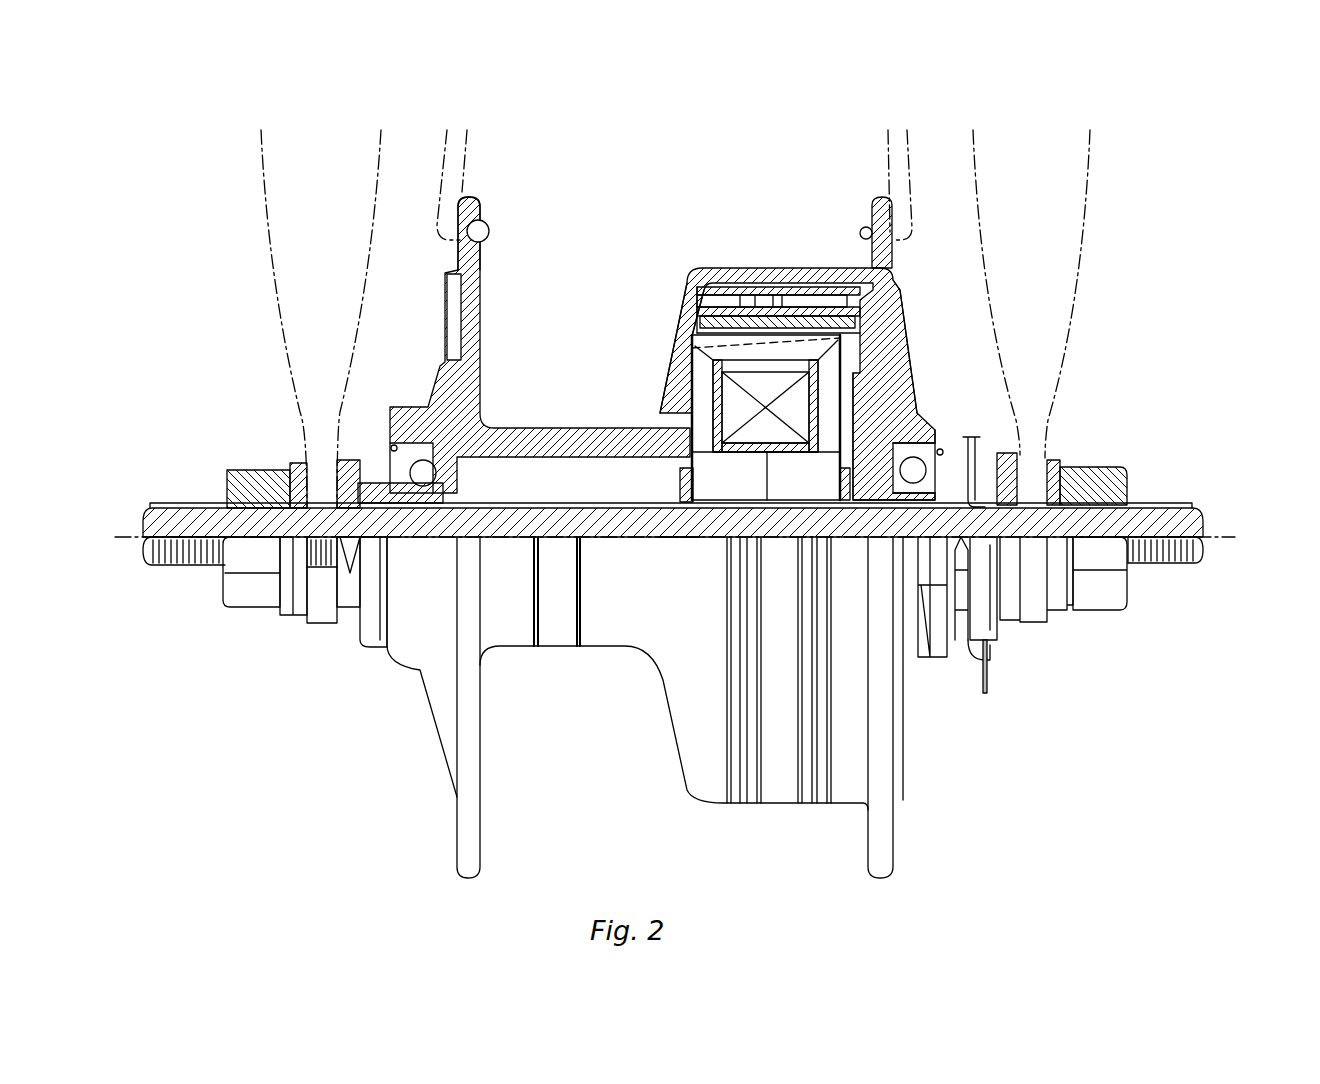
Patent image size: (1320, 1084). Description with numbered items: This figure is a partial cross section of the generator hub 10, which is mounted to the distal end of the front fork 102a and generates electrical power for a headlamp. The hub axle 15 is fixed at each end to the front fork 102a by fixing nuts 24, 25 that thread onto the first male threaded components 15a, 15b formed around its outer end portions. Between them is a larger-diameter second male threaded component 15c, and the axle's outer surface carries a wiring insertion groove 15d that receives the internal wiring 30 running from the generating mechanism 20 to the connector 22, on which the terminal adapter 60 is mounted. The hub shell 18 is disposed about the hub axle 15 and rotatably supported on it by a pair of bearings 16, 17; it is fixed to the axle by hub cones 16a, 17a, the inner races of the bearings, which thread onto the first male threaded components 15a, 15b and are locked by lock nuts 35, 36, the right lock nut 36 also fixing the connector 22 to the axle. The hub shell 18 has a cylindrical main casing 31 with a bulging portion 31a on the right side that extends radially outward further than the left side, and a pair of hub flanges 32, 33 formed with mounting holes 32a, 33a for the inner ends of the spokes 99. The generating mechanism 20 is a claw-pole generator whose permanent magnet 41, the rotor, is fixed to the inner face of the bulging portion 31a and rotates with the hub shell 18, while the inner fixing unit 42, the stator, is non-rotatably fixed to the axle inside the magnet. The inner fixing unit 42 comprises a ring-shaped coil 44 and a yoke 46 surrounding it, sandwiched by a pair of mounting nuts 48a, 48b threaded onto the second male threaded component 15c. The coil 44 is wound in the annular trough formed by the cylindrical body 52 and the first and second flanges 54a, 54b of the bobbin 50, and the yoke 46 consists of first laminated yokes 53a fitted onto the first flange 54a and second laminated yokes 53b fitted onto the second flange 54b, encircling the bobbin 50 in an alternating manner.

The generator hub 10 is at (617, 162).
The hub axle 15 is at (1216, 504).
The first male threaded component 15a is at (172, 507).
The first male threaded component 15b is at (1170, 505).
The second male threaded component 15c is at (553, 504).
The wiring insertion groove 15d is at (688, 537).
The bearing 16 is at (433, 403).
The hub cone 16a is at (377, 460).
The bearing 17 is at (945, 430).
The hub cone 17a is at (1010, 455).
The hub shell 18 is at (572, 406).
The generating mechanism 20 is at (767, 268).
The connector 22 is at (973, 620).
The fixing nut 24 is at (265, 597).
The fixing nut 25 is at (1093, 590).
The internal wiring 30 is at (945, 663).
The main casing 31 is at (530, 425).
The bulging portion 31a is at (722, 268).
The hub flange 32 is at (481, 202).
The mounting holes 32a is at (489, 227).
The hub flange 33 is at (880, 197).
The mounting holes 33a is at (868, 224).
The lock nut 35 is at (348, 597).
The lock nut 36 is at (1048, 460).
The permanent magnet 41 is at (700, 278).
The inner fixing unit 42 is at (801, 326).
The coil 44 is at (732, 398).
The yoke 46 is at (718, 360).
The mounting nut 48a is at (680, 496).
The mounting nut 48b is at (925, 400).
The bobbin 50 is at (783, 458).
The cylindrical body 52 is at (736, 450).
The first laminated yokes 53a is at (695, 297).
The second laminated yokes 53b is at (900, 295).
The first flange 54a is at (693, 420).
The second flange 54b is at (848, 362).
The terminal adapter 60 is at (1000, 645).
The spokes 99 is at (468, 143).
The front fork 102a is at (263, 217).